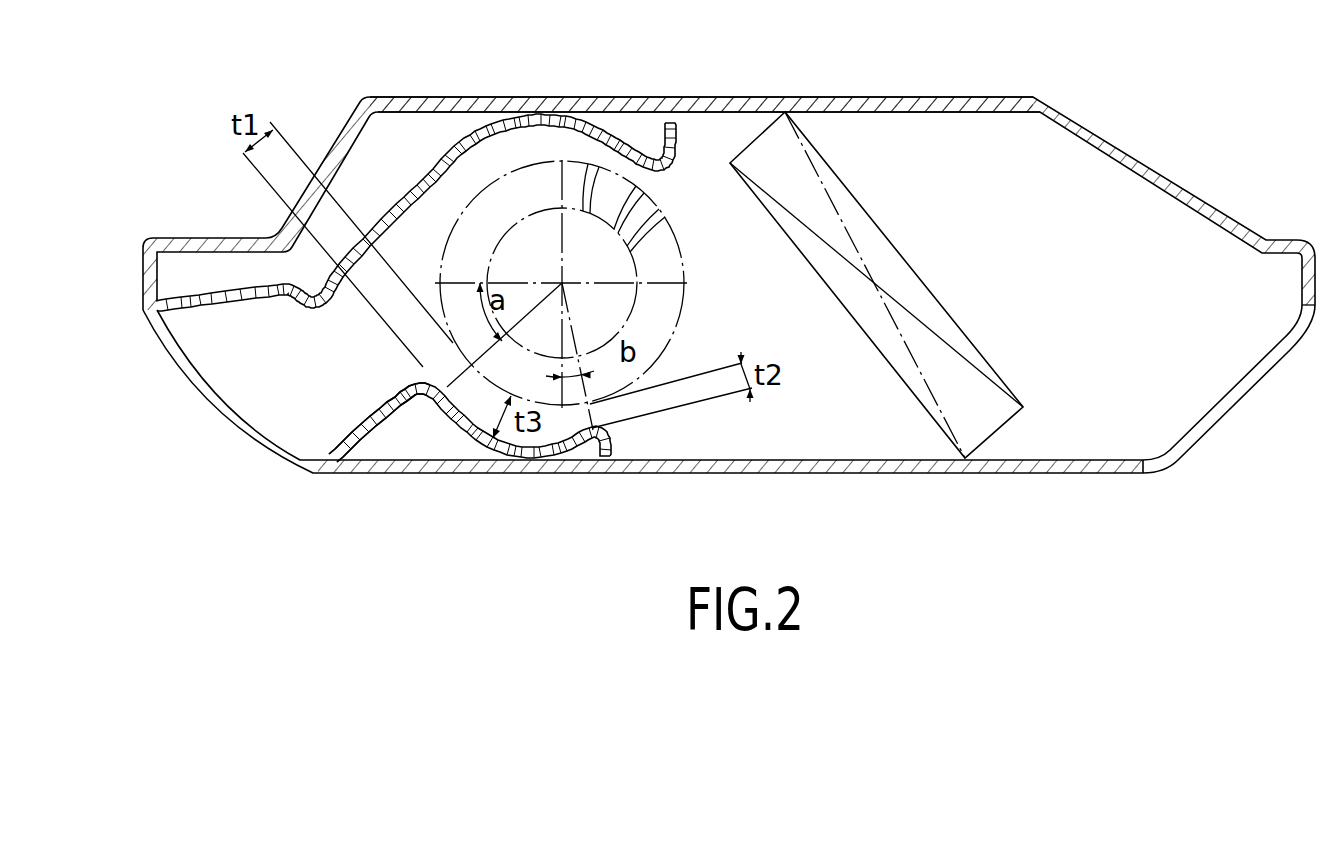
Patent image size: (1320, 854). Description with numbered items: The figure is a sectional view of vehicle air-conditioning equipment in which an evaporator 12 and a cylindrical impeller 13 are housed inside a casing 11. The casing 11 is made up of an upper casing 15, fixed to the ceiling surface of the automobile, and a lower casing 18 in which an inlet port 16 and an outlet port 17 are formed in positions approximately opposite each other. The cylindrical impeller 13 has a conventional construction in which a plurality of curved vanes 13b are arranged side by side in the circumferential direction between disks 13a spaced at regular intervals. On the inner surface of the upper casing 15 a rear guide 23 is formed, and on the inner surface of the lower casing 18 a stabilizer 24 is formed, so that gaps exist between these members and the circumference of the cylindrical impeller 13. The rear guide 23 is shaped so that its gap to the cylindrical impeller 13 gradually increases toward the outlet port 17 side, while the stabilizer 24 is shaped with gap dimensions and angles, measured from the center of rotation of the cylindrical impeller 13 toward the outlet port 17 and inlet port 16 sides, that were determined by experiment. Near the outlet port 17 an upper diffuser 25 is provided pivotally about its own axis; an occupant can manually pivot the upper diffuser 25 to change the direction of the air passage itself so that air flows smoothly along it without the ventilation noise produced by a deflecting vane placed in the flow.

The casing 11 is at (1172, 157).
The evaporator 12 is at (886, 226).
The cylindrical impeller 13 is at (687, 273).
The disks 13a is at (686, 242).
The curved vanes 13b is at (662, 212).
The upper casing 15 is at (1042, 100).
The inlet port 16 is at (1196, 450).
The outlet port 17 is at (298, 462).
The lower casing 18 is at (1062, 473).
The rear guide 23 is at (526, 118).
The stabilizer 24 is at (500, 455).
The upper diffuser 25 is at (406, 381).